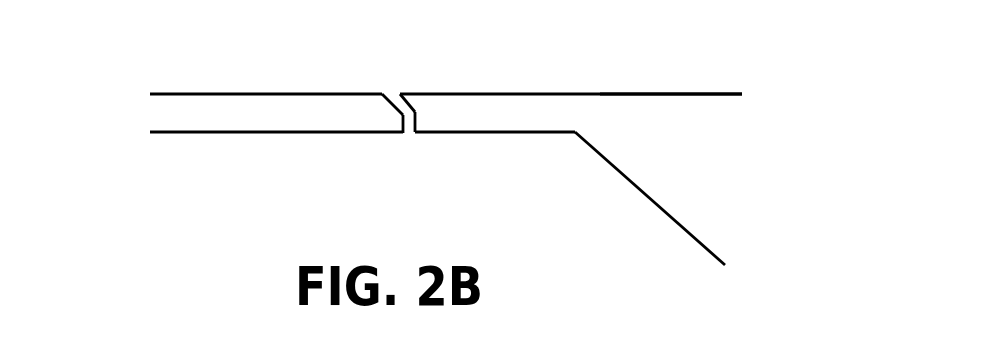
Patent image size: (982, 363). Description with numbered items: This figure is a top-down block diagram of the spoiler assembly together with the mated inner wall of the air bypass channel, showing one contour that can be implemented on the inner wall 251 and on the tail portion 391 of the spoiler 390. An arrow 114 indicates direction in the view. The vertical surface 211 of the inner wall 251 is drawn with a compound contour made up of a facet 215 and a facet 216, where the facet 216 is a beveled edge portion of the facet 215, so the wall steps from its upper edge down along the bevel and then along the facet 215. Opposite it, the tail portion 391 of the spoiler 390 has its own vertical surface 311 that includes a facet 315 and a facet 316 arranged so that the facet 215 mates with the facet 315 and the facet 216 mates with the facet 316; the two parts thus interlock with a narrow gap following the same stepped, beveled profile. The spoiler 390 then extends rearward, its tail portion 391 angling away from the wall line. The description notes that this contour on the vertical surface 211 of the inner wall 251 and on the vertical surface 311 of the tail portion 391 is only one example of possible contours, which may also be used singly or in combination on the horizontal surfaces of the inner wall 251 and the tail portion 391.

The direction arrow 114 is at (105, 58).
The inner wall 251 is at (180, 112).
The vertical surface 211 is at (363, 115).
The facet 216 is at (383, 108).
The facet 215 is at (393, 120).
The facet 316 is at (413, 104).
The facet 315 is at (422, 122).
The vertical surface 311 is at (435, 115).
The tail portion 391 is at (507, 115).
The spoiler 390 is at (652, 117).